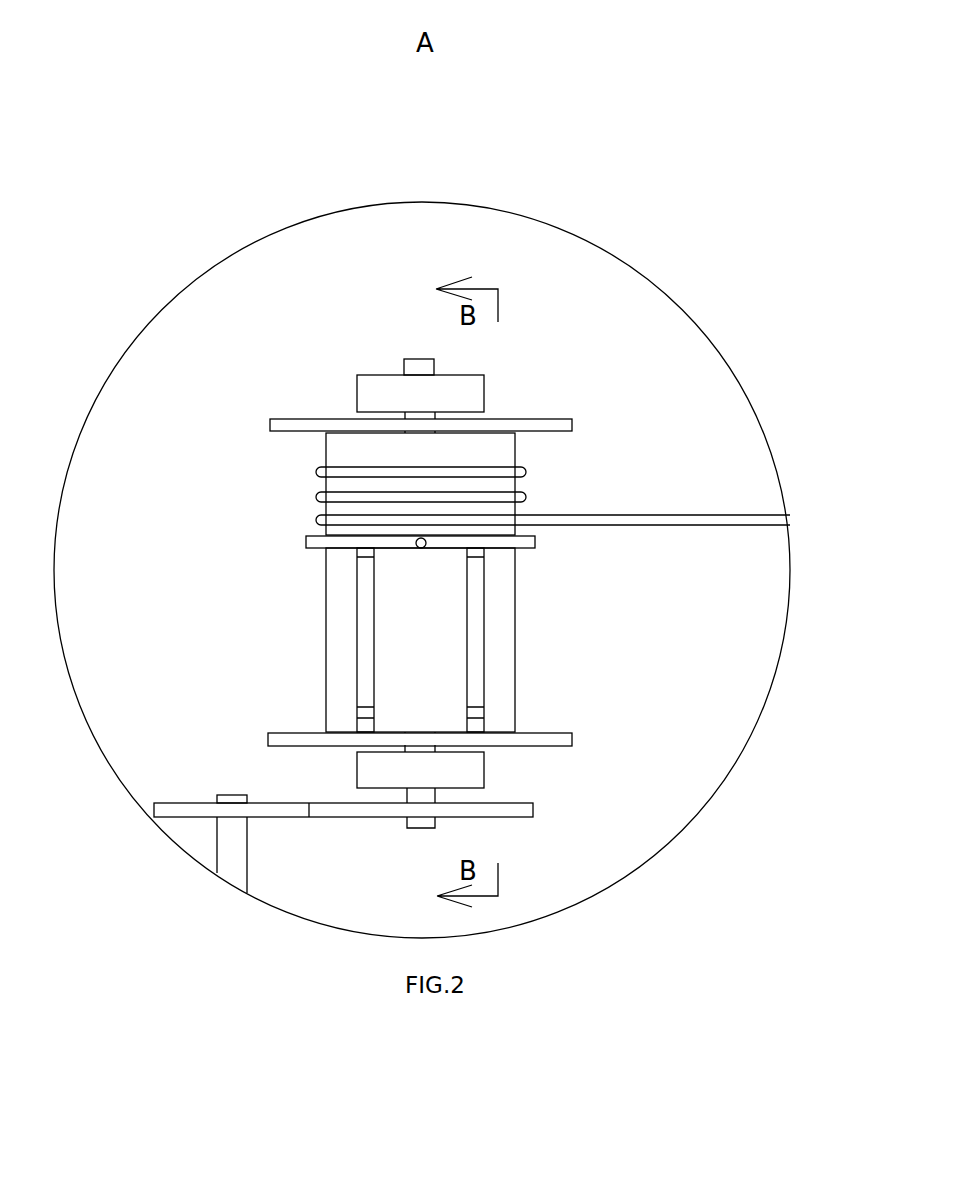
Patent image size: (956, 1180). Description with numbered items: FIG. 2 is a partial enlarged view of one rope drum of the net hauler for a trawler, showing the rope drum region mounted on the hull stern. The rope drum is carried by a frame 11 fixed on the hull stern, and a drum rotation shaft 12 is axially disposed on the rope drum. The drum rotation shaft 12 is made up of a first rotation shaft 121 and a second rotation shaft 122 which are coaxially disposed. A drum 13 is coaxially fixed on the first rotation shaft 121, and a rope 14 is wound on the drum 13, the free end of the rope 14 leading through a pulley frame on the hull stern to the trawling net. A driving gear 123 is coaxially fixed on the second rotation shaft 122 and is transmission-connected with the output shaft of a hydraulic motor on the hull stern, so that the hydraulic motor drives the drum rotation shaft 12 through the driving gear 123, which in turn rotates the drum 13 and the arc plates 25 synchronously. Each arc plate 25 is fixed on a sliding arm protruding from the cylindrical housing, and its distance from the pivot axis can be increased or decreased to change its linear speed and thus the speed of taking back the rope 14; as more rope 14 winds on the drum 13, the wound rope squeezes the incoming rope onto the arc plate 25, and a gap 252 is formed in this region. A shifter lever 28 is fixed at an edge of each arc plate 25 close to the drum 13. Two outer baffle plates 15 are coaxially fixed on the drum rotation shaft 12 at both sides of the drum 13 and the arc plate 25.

The frame 11 is at (388, 392).
The drum rotation shaft 12 is at (478, 355).
The first rotation shaft 121 is at (422, 368).
The second rotation shaft 122 is at (448, 800).
The driving gear 123 is at (385, 808).
The drum 13 is at (355, 450).
The rope 14 is at (697, 520).
The outer baffle plate 15 is at (535, 738).
The arc plate 25 is at (393, 623).
The gap 252 is at (474, 633).
The shifter lever 28 is at (310, 540).